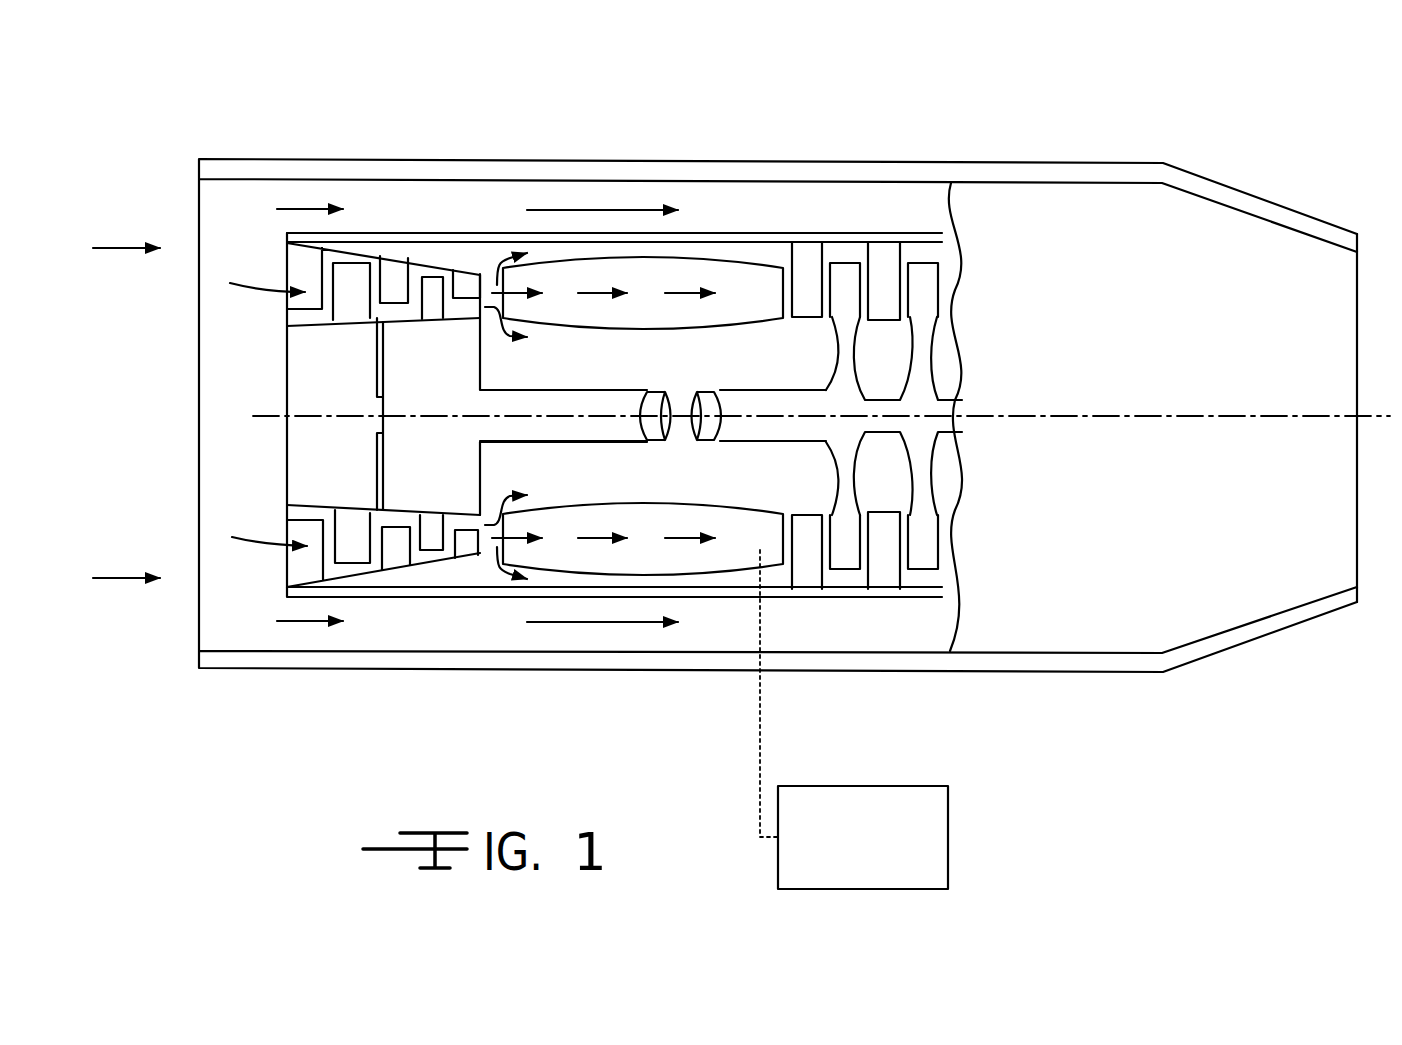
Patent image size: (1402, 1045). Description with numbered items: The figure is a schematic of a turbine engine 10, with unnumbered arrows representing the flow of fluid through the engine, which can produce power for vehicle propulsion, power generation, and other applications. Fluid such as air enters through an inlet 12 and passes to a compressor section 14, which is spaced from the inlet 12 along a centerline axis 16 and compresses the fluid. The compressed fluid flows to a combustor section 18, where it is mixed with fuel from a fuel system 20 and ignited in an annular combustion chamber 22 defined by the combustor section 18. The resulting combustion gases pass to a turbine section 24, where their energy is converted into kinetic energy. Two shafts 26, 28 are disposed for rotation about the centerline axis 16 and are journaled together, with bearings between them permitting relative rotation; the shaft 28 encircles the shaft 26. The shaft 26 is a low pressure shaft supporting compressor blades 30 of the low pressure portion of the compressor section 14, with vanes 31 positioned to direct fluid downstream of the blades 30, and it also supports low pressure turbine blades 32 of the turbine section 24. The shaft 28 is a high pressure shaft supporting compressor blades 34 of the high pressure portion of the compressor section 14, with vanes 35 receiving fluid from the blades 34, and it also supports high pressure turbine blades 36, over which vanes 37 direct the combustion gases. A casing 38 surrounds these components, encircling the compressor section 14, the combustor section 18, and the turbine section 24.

The turbine engine 10 is at (1177, 97).
The inlet 12 is at (200, 192).
The compressor section 14 is at (398, 620).
The centerline axis 16 is at (1357, 416).
The combustor section 18 is at (730, 603).
The fuel system 20 is at (849, 847).
The annular combustion chamber 22 is at (742, 310).
The turbine section 24 is at (862, 603).
The shaft 26 is at (303, 377).
The shaft 28 is at (557, 400).
The compressor blades 30 is at (353, 283).
The vanes 31 is at (398, 272).
The low pressure turbine blades 32 is at (922, 288).
The compressor blades 34 is at (437, 287).
The vanes 35 is at (472, 278).
The high pressure turbine blades 36 is at (852, 288).
The vanes 37 is at (805, 273).
The casing 38 is at (797, 222).